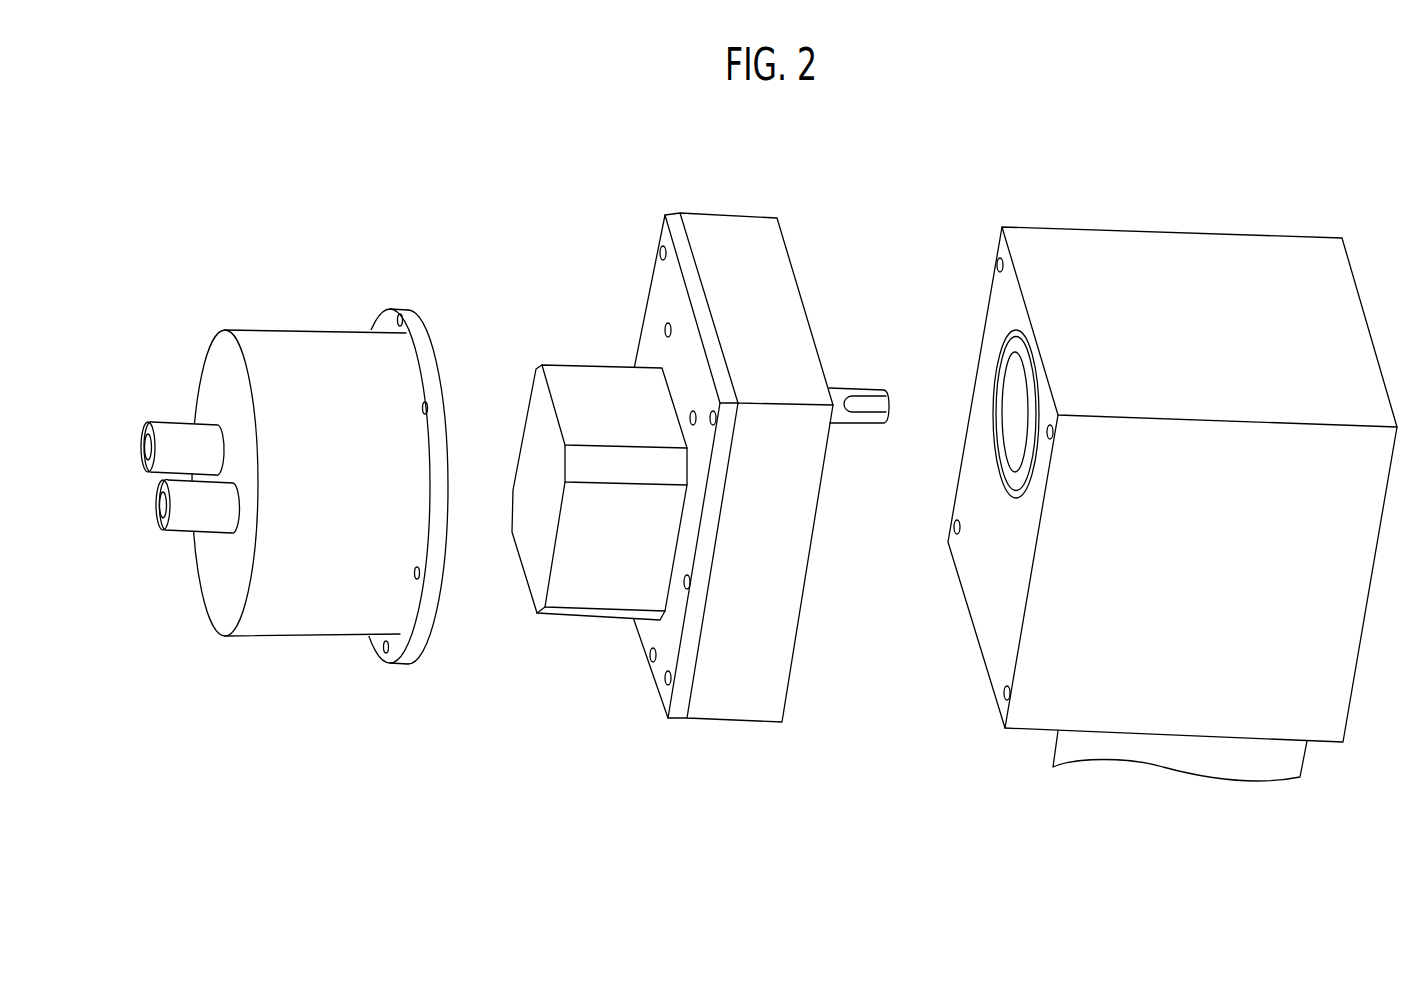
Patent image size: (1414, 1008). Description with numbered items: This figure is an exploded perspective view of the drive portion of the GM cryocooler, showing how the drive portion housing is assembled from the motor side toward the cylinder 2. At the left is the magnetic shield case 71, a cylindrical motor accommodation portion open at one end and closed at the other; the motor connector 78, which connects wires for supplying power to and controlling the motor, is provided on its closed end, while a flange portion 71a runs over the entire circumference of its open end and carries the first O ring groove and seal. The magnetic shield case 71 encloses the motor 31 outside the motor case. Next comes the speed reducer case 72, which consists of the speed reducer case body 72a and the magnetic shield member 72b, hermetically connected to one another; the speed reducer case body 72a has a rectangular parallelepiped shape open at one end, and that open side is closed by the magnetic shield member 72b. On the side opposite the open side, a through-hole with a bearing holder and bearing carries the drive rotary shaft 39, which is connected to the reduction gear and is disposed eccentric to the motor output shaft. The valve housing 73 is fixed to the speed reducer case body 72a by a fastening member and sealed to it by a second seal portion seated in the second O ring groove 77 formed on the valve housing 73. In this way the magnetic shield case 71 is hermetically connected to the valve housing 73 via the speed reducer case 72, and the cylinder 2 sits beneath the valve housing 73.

The cylinder 2 is at (1310, 760).
The motor 31 is at (585, 363).
The drive rotary shaft 39 is at (872, 388).
The magnetic shield case 71 is at (304, 328).
The flange portion 71a is at (411, 309).
The speed reducer case 72 is at (717, 547).
The speed reducer case body 72a is at (734, 722).
The magnetic shield member 72b is at (674, 722).
The valve housing 73 is at (1164, 443).
The second O ring groove 77 is at (1003, 344).
The motor connector 78 is at (143, 468).